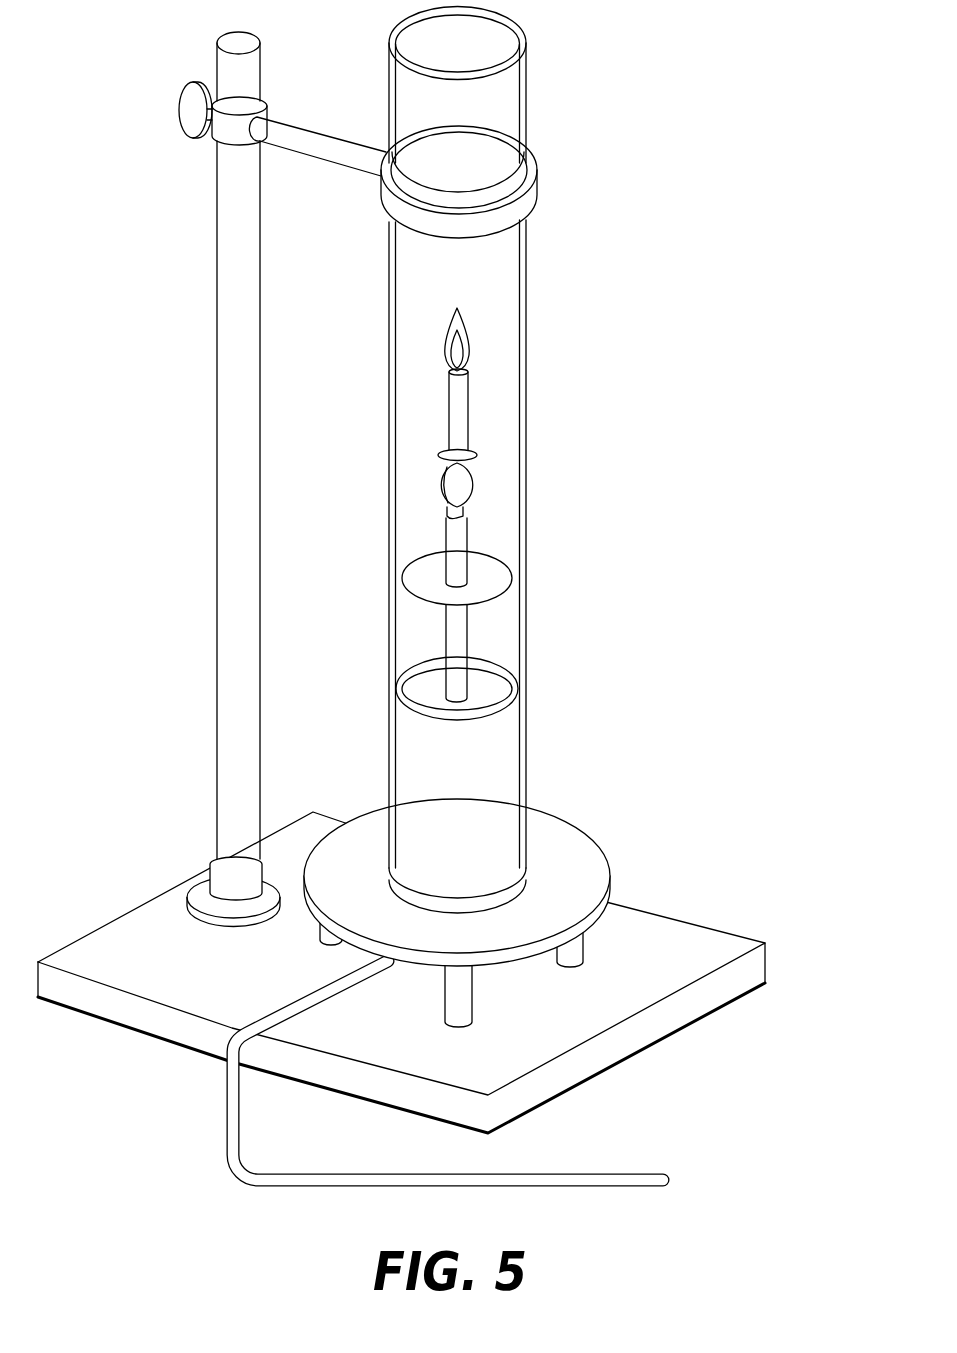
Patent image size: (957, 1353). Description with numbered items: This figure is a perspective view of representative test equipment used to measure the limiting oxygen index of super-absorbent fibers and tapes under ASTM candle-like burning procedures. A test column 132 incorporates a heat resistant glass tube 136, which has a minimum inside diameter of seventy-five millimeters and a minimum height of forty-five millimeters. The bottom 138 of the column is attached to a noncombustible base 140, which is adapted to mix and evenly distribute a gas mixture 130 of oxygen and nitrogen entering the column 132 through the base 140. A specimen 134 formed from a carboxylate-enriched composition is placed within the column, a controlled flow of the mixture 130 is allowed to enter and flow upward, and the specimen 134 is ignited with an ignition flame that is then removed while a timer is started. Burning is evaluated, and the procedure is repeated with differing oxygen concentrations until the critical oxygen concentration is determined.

The mixture 130 is at (853, 1180).
The test column 132 is at (497, 499).
The specimen 134 is at (459, 394).
The heat resistant glass tube 136 is at (525, 625).
The bottom of the column 138 is at (607, 885).
The noncombustible base 140 is at (370, 820).